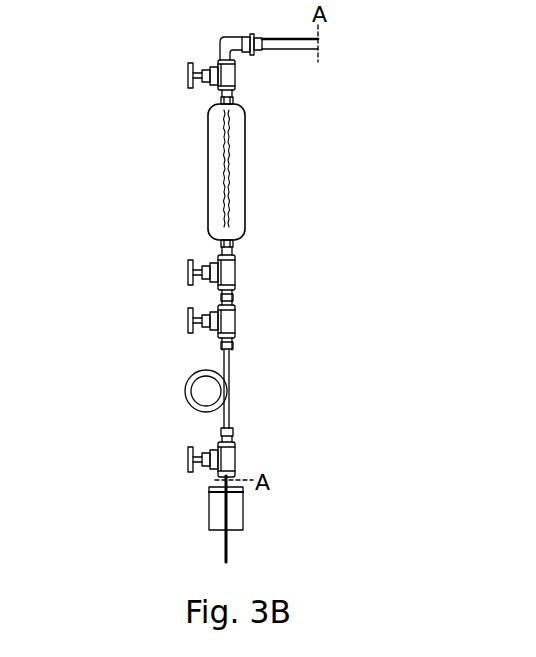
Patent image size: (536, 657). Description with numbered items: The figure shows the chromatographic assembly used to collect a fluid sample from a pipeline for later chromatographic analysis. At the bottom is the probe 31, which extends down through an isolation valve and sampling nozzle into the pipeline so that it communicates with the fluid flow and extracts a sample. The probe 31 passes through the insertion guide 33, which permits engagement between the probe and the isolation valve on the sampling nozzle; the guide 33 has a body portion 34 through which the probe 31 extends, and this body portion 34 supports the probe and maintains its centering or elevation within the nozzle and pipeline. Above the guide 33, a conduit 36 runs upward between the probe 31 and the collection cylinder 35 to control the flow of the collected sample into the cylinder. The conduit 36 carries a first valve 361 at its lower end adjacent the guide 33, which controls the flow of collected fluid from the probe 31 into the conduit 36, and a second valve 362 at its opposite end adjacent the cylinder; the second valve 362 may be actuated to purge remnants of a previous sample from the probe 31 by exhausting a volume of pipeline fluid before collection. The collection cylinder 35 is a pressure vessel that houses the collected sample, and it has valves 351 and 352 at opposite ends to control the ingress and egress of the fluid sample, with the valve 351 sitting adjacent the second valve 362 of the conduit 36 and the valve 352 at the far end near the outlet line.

The probe 31 is at (228, 557).
The insertion guide 33 is at (243, 526).
The body portion 34 is at (209, 502).
The collection cylinder 35 is at (245, 181).
The conduit 36 is at (230, 373).
The valve 351 is at (188, 271).
The valve 352 is at (189, 74).
The first valve 361 is at (188, 459).
The second valve 362 is at (189, 322).